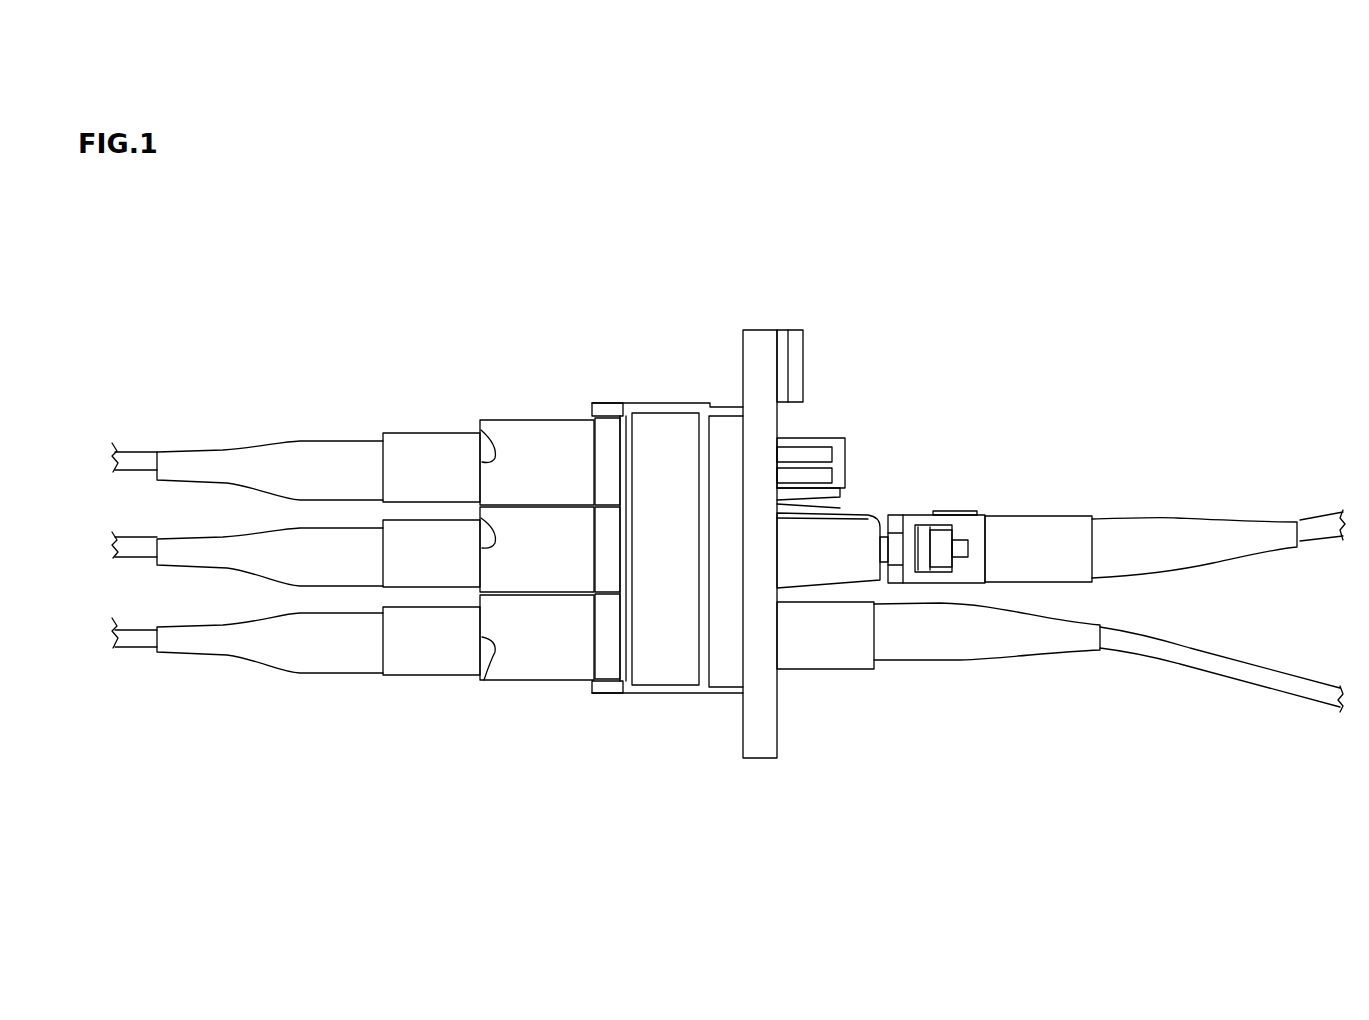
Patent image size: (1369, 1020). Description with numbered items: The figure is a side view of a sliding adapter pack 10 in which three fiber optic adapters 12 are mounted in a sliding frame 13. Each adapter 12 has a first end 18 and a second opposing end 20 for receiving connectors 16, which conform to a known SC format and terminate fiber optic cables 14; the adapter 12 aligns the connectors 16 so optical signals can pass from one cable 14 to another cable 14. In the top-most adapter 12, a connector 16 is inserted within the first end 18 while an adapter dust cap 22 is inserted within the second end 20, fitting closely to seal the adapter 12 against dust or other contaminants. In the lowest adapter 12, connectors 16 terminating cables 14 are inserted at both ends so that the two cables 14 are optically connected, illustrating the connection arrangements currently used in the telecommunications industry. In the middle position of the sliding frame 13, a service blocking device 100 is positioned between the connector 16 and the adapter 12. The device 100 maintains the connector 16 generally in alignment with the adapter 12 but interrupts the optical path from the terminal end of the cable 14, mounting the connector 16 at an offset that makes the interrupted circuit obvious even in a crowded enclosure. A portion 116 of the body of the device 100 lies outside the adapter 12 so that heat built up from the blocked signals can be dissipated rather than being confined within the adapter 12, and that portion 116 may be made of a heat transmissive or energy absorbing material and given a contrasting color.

The sliding adapter pack 10 is at (641, 309).
The fiber optic adapter 12 is at (552, 476).
The sliding frame 13 is at (763, 347).
The fiber optic cable 14 is at (133, 462).
The connector 16 is at (955, 520).
The first end 18 is at (482, 527).
The second opposing end 20 is at (614, 435).
The adapter dust cap 22 is at (837, 447).
The service blocking device 100 is at (832, 532).
The portion of body 116 is at (838, 530).